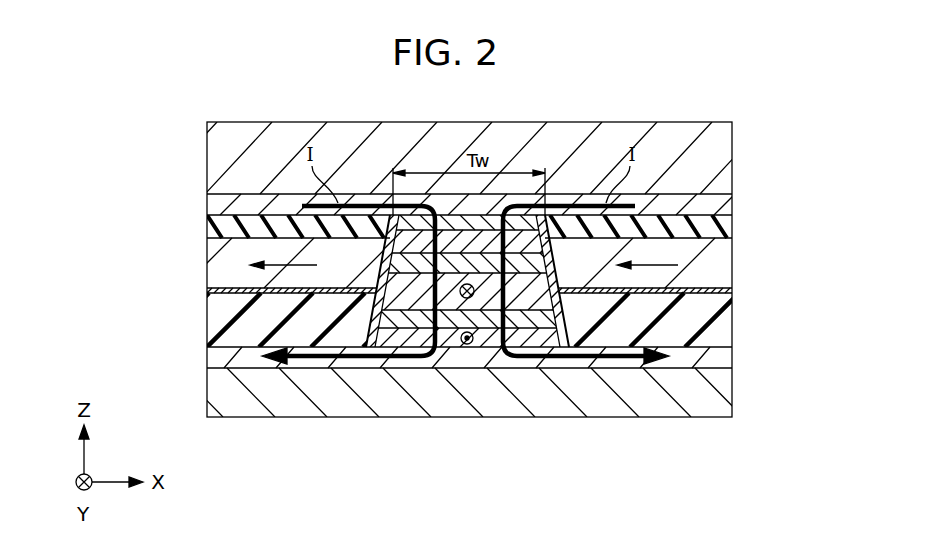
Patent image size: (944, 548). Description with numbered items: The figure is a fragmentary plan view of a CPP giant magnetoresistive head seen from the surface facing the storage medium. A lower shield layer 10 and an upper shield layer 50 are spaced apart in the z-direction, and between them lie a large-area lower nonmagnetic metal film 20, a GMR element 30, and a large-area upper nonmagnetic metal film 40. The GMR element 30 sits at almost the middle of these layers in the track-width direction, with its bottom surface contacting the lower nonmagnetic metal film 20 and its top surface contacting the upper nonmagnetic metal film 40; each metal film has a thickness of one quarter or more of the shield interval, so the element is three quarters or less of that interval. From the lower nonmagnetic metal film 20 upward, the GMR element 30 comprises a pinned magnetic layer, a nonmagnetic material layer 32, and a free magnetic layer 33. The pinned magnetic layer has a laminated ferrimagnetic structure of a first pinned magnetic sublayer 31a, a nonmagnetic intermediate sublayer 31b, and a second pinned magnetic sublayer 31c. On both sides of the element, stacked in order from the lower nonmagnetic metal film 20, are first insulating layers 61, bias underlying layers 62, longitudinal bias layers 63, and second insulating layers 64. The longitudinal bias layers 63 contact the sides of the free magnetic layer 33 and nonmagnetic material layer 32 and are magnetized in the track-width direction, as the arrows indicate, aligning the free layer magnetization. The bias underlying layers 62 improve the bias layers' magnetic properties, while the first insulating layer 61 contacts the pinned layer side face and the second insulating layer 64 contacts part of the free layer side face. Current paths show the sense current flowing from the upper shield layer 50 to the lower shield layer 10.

The lower shield layer 10 is at (728, 402).
The large-area lower nonmagnetic metal film 20 is at (728, 355).
The GMR element 30 is at (454, 359).
The first pinned magnetic sublayer 31a is at (365, 463).
The nonmagnetic intermediate sublayer 31b is at (512, 320).
The second pinned magnetic sublayer 31c is at (475, 303).
The nonmagnetic material layer 32 is at (427, 290).
The free magnetic layer 33 is at (400, 248).
The large-area upper nonmagnetic metal film 40 is at (728, 202).
The upper shield layer 50 is at (728, 172).
The first insulating layer 61 is at (728, 324).
The bias underlying layer 62 is at (728, 290).
The longitudinal bias layer 63 is at (728, 267).
The second insulating layer 64 is at (728, 224).